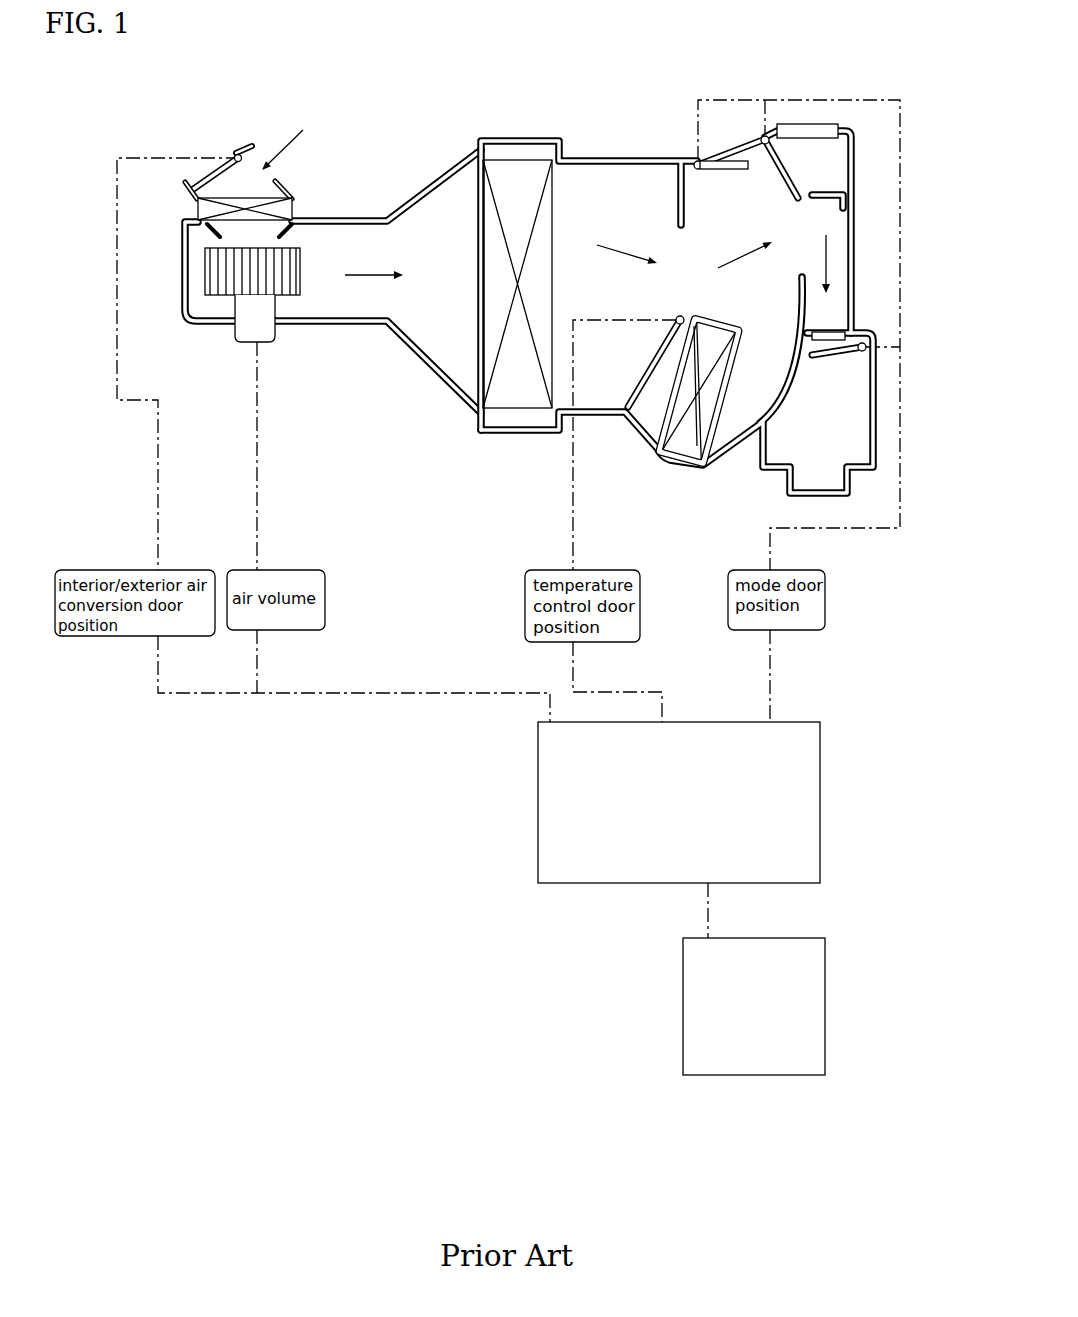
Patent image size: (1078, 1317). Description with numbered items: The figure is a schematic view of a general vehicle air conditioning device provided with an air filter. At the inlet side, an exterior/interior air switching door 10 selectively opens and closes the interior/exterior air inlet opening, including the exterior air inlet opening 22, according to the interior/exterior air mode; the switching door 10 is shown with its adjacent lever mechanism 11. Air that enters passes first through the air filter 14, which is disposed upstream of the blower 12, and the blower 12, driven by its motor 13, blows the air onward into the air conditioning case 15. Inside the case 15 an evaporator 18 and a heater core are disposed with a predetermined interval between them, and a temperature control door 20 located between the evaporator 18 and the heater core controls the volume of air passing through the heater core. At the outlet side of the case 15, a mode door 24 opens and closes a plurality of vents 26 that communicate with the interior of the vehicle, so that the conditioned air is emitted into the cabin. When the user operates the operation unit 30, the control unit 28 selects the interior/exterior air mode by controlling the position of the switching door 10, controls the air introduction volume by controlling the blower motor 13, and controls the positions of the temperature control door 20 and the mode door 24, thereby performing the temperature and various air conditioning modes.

The exterior/interior air switching door 10 is at (215, 328).
The interior/exterior air conversion door 11 is at (207, 173).
The blower 12 is at (222, 280).
The blower motor 13 is at (265, 333).
The air filter 14 is at (263, 200).
The air conditioning case 15 is at (458, 401).
The evaporator 18 is at (516, 170).
The temperature control door 20 is at (660, 352).
The exterior air inlet opening 22 is at (685, 392).
The mode door 24 is at (748, 163).
The air vents 26 is at (828, 333).
The control unit 28 is at (815, 721).
The operation unit 30 is at (763, 938).